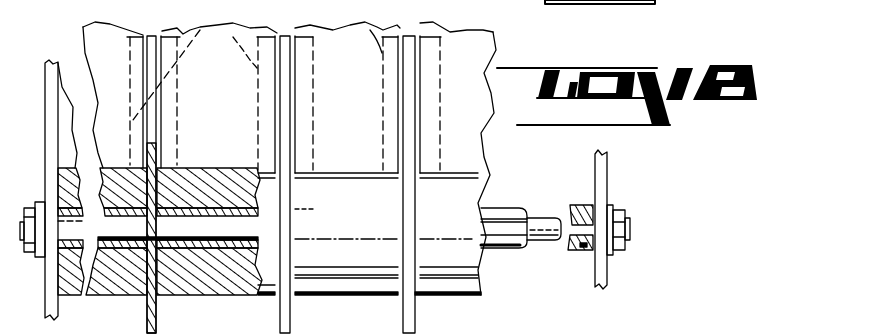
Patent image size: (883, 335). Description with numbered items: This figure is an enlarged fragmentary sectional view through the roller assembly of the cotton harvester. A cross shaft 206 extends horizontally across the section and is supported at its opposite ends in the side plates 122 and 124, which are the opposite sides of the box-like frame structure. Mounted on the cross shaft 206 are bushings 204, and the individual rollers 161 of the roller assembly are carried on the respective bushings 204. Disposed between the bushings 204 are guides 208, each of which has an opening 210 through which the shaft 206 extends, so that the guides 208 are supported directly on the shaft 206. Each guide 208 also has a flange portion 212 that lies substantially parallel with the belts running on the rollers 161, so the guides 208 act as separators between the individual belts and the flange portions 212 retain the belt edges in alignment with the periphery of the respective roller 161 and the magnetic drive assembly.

The side plate 122 is at (600, 194).
The side plate 124 is at (57, 62).
The roller 161 is at (128, 270).
The bushing 204 is at (482, 227).
The cross shaft 206 is at (199, 212).
The guide 208 is at (410, 207).
The opening 210 is at (189, 232).
The flange portion 212 is at (200, 28).